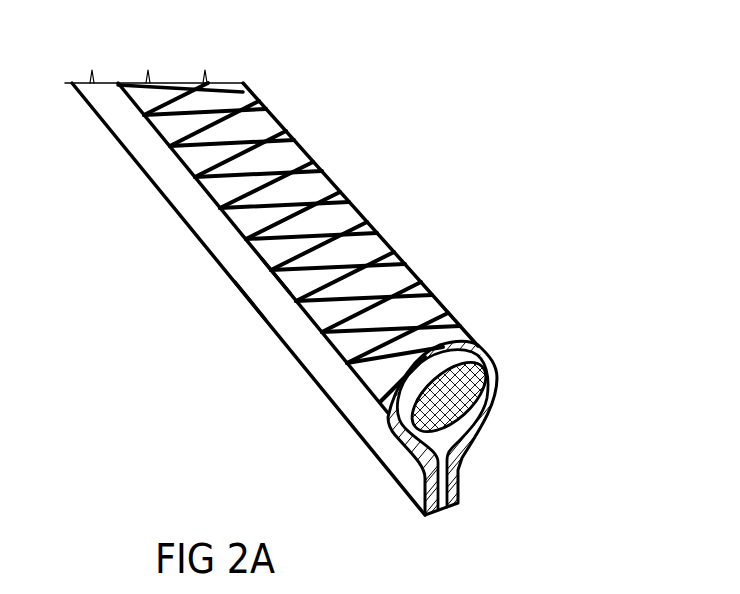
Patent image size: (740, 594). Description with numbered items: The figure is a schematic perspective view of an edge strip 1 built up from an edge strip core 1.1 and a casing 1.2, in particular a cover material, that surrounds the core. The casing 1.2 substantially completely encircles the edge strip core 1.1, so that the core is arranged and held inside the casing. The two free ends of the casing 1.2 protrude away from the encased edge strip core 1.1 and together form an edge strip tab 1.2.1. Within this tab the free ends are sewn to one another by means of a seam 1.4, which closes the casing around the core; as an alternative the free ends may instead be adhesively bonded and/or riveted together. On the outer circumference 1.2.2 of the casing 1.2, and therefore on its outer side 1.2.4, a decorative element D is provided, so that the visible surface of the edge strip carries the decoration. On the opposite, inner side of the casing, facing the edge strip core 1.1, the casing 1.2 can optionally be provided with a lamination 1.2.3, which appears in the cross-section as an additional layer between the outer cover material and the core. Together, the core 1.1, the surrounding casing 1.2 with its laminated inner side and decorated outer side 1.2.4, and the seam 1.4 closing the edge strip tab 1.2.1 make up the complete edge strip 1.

The edge strip 1 is at (452, 166).
The edge strip core 1.1 is at (485, 390).
The casing 1.2 is at (456, 316).
The edge strip tab 1.2.1 is at (458, 478).
The outer circumference 1.2.2 is at (314, 168).
The lamination 1.2.3 is at (470, 436).
The outer side 1.2.4 is at (197, 160).
The seam 1.4 is at (334, 352).
The decorative element D is at (278, 273).